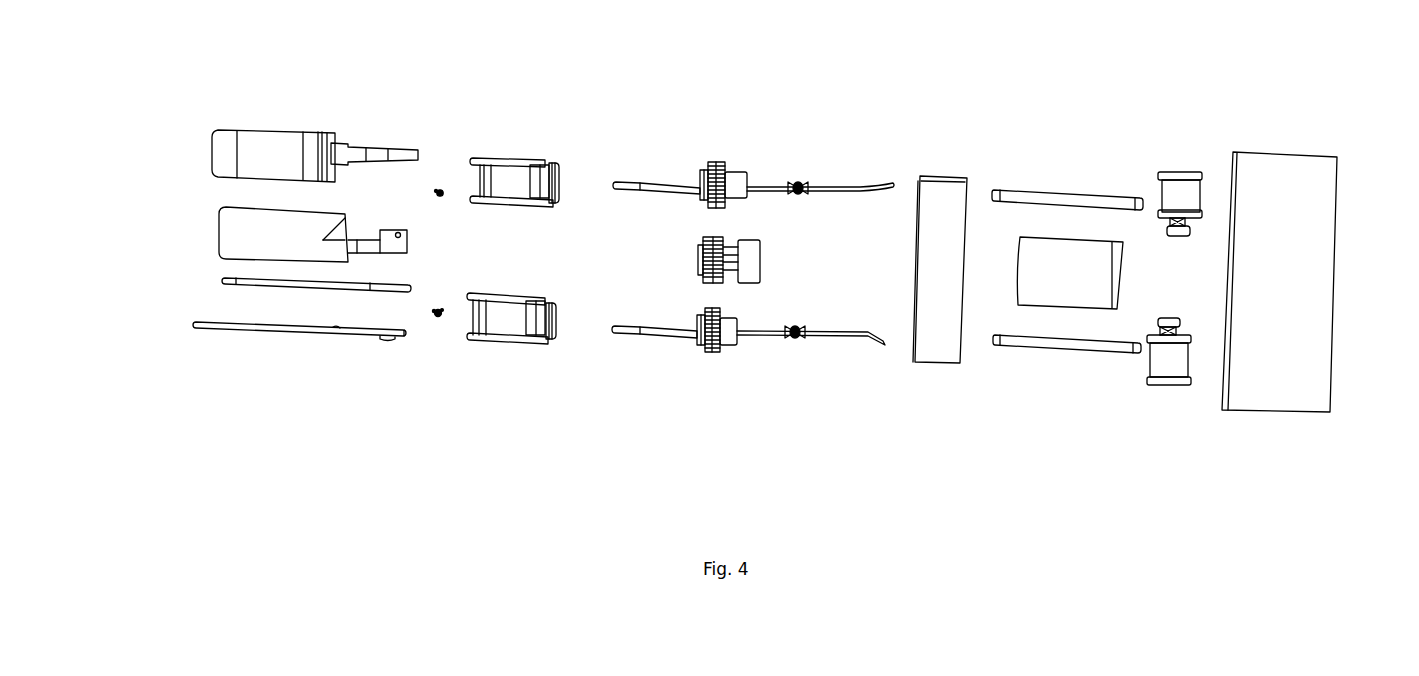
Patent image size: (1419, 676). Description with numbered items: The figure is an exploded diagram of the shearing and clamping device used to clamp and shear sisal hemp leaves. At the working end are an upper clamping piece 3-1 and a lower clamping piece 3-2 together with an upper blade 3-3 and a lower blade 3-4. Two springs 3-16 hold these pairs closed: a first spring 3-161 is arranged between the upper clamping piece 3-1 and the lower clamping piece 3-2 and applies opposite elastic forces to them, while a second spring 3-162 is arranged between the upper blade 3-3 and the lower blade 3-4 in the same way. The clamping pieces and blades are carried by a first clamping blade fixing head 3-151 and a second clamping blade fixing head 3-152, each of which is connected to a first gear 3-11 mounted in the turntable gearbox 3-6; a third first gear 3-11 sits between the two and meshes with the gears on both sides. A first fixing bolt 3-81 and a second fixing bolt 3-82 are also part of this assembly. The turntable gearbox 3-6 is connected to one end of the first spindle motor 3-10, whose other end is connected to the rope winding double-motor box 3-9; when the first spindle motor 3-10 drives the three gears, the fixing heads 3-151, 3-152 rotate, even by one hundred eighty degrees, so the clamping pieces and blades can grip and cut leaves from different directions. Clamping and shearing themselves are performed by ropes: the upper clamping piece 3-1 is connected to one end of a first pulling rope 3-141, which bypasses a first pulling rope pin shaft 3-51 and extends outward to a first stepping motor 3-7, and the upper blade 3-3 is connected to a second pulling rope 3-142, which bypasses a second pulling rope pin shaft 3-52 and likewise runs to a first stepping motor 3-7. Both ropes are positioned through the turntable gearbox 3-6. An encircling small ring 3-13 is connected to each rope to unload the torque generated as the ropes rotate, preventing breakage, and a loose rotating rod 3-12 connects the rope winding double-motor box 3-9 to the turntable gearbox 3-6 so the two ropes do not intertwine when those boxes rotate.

The upper clamping piece 3-1 is at (230, 240).
The lower clamping piece 3-2 is at (280, 148).
The upper blade 3-3 is at (235, 282).
The lower blade 3-4 is at (270, 332).
The springs 3-16 is at (412, 328).
The first spring 3-161 is at (439, 190).
The second spring 3-162 is at (437, 315).
The first pulling rope pin shaft 3-51 is at (490, 177).
The second pulling rope pin shaft 3-52 is at (488, 325).
The first fixing bolt 3-81 is at (537, 177).
The second fixing bolt 3-82 is at (532, 327).
The first clamping blade fixing head 3-151 is at (552, 162).
The second clamping blade fixing head 3-152 is at (545, 342).
The first pulling rope 3-141 is at (677, 183).
The second pulling rope 3-142 is at (677, 330).
The first gear 3-11 is at (718, 173).
The encircling small ring 3-13 is at (802, 188).
The turntable gearbox 3-6 is at (940, 215).
The loose rotating rod 3-12 is at (1058, 200).
The first spindle motor 3-10 is at (1095, 257).
The first stepping motor 3-7 is at (1175, 200).
The rope winding double-motor box 3-9 is at (1312, 193).